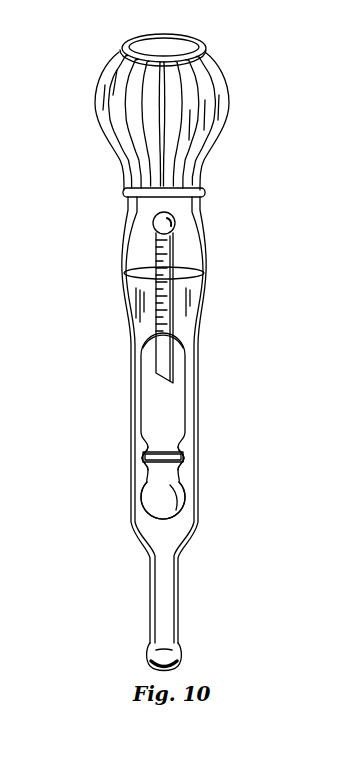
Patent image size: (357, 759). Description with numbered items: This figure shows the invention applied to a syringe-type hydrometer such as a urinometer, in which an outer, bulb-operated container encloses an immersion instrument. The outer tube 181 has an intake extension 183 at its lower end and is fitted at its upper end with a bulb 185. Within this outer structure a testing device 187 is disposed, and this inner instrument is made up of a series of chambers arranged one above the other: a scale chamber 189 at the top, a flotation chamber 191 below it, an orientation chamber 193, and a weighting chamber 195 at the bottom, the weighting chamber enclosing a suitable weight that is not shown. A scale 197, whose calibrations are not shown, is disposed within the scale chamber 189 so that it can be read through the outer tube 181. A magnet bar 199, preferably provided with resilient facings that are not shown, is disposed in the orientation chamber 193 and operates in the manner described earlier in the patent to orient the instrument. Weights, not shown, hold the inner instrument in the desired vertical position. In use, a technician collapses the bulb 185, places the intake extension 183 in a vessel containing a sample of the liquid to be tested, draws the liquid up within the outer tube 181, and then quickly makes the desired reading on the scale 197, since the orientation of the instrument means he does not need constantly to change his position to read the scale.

The outer tube 181 is at (122, 262).
The intake extension 183 is at (178, 588).
The bulb 185 is at (230, 104).
The testing device 187 is at (131, 343).
The scale chamber 189 is at (173, 238).
The flotation chamber 191 is at (190, 394).
The orientation chamber 193 is at (147, 448).
The weighting chamber 195 is at (143, 508).
The scale 197 is at (173, 303).
The magnet bar 199 is at (184, 457).